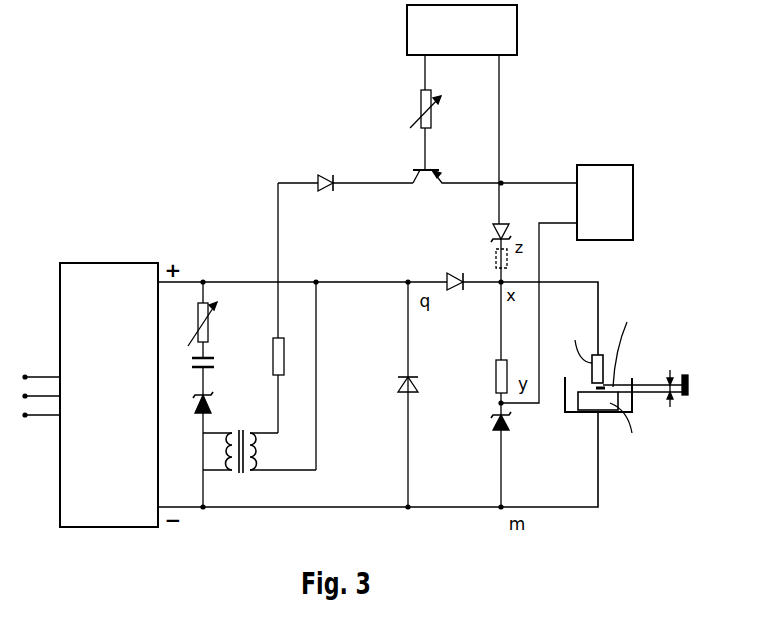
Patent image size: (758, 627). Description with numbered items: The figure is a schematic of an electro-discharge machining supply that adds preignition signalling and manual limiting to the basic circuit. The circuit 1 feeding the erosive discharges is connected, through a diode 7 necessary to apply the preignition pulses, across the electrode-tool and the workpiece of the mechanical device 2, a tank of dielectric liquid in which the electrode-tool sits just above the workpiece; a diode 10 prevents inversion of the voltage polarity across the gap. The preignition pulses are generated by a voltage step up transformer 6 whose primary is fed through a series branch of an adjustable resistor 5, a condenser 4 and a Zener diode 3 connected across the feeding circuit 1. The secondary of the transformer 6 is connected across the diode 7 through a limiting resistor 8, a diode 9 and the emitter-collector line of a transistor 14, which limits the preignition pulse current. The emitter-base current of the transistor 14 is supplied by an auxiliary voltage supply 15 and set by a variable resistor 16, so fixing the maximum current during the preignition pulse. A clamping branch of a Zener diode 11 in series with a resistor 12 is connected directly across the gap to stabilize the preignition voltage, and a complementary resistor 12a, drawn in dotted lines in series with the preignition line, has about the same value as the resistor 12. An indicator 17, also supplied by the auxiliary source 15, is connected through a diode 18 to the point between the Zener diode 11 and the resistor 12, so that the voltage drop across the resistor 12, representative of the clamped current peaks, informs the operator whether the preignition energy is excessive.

The circuit feeding the erosive discharges 1 is at (90, 395).
The mechanical device for electro-discharge machining 2 is at (634, 380).
The Zener diode 3 is at (213, 412).
The condenser 4 is at (213, 373).
The adjustable resistor 5 is at (211, 320).
The voltage step up transformer 6 is at (259, 468).
The diode 7 is at (448, 270).
The limiting resistor 8 is at (294, 326).
The diode 9 is at (345, 174).
The diode 10 is at (395, 394).
The Zener diode 11 is at (488, 459).
The resistor 12 is at (486, 348).
The complementary resistor 12a is at (492, 263).
The transistor 14 is at (457, 189).
The auxiliary voltage supply 15 is at (462, 94).
The variable resistor 16 is at (415, 130).
The indicator 17 is at (567, 284).
The diode 18 is at (486, 216).